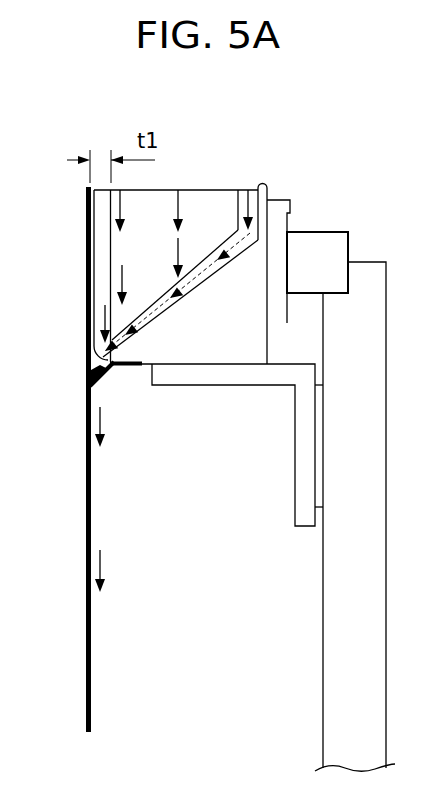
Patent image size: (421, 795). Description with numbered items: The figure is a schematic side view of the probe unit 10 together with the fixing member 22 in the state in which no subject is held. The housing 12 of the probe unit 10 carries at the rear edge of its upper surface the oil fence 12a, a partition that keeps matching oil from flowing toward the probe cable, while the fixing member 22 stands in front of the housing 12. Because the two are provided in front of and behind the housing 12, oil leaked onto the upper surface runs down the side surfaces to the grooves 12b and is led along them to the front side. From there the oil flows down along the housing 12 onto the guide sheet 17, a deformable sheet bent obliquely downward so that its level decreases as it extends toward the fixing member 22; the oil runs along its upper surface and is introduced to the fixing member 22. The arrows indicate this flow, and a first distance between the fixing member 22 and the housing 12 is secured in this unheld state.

The probe unit 10 is at (213, 183).
The housing 12 is at (135, 262).
The oil fence 12a is at (260, 186).
The grooves 12b is at (133, 307).
The guide sheet 17 is at (96, 372).
The fixing member 22 is at (86, 464).